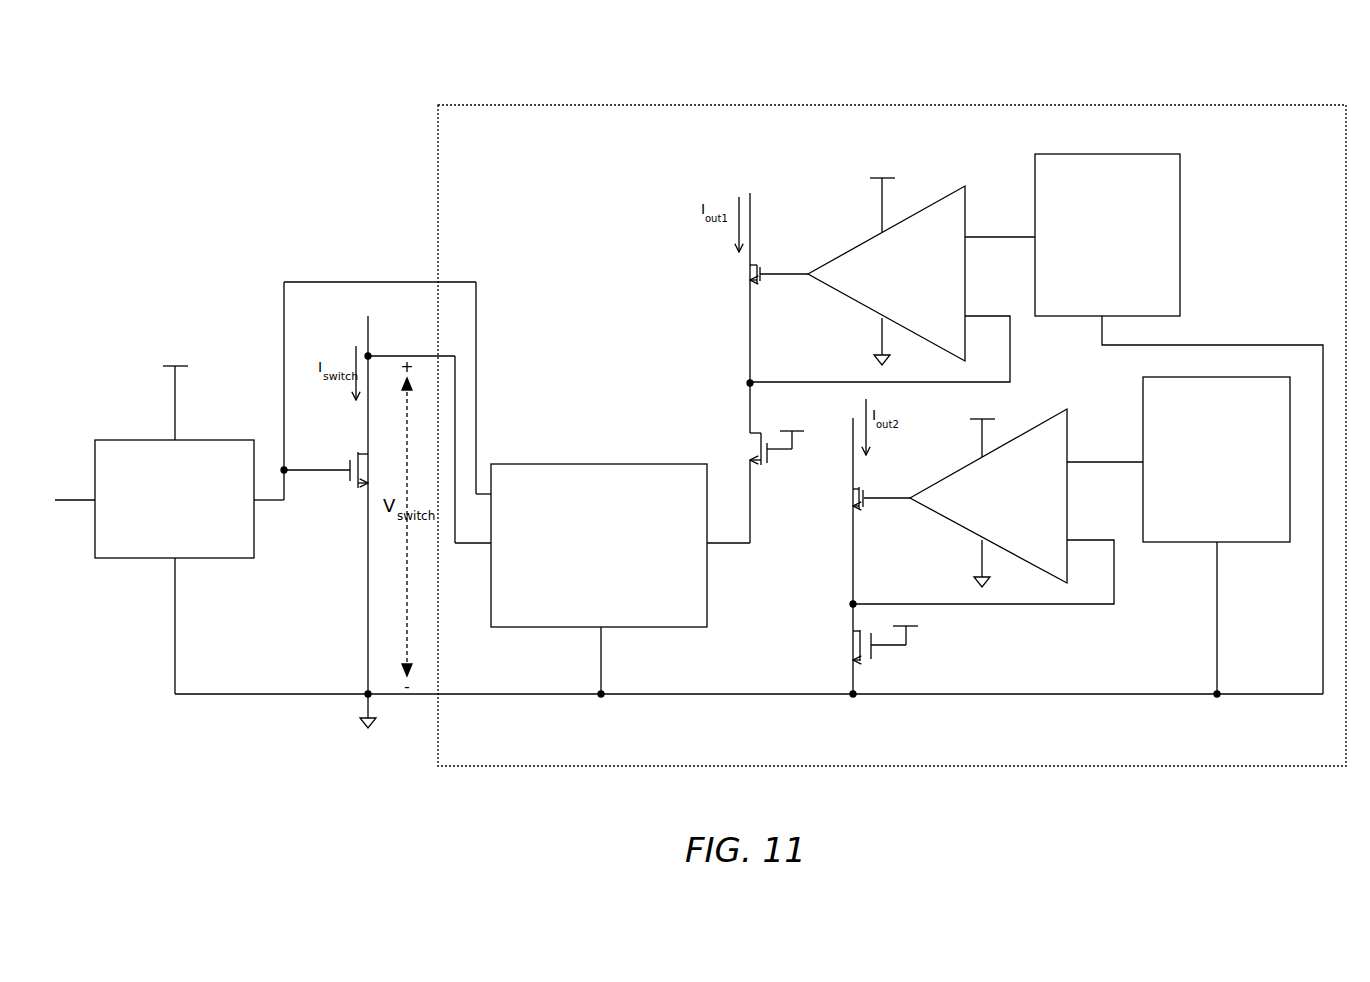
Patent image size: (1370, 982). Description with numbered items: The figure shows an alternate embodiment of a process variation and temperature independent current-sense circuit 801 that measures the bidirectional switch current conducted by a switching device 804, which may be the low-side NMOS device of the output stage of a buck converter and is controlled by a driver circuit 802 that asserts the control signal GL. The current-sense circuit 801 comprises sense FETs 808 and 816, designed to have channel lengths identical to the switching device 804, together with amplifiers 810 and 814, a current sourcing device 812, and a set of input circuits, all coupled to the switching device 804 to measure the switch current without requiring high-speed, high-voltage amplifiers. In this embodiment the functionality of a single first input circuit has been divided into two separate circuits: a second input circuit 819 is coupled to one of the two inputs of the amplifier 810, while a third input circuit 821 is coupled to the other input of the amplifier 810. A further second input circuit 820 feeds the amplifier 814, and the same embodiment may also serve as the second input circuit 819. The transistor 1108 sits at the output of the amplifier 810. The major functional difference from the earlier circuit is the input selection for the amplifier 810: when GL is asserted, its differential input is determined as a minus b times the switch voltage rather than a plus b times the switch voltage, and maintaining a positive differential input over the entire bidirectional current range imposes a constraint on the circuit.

The current-sense circuit 801 is at (1343, 758).
The driver circuit 802 is at (131, 440).
The switching device 804 is at (361, 453).
The sense FET 808 is at (758, 457).
The amplifier 810 is at (848, 250).
The current sourcing device 812 is at (853, 496).
The amplifier 814 is at (946, 476).
The sense FET 816 is at (855, 636).
The second input circuit 819 is at (1071, 154).
The second input circuit 820 is at (1173, 377).
The third input circuit 821 is at (568, 463).
The transistor 1108 is at (757, 285).